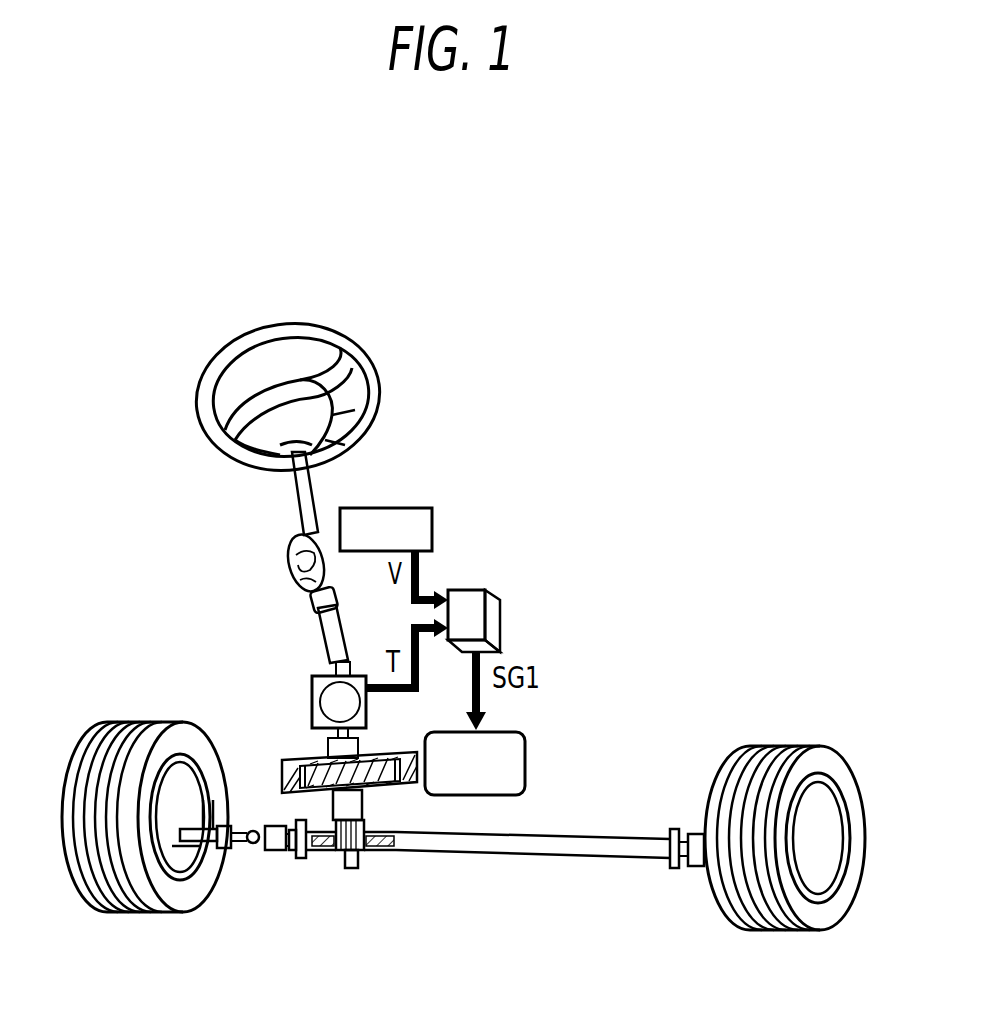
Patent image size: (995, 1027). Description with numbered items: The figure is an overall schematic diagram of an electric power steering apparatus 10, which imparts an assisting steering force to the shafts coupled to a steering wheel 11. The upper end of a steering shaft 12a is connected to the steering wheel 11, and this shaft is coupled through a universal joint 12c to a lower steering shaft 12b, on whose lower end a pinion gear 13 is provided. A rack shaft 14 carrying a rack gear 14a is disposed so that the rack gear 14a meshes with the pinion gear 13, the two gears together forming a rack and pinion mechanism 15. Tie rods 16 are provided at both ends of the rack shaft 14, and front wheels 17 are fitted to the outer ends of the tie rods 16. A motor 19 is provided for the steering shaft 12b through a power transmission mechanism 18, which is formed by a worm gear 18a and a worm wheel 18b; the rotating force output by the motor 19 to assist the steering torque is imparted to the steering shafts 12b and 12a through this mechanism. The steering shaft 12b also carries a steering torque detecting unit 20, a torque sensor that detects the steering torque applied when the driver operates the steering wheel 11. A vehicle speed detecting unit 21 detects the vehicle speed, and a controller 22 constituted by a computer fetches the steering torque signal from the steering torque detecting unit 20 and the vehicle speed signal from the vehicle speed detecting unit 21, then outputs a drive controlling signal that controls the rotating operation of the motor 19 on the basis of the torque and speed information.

The electric power steering apparatus 10 is at (356, 285).
The steering wheel 11 is at (370, 354).
The steering shaft 12a is at (308, 470).
The steering shaft 12b is at (326, 668).
The universal joint 12c is at (274, 553).
The pinion gear 13 is at (333, 852).
The rack shaft 14 is at (498, 849).
The rack gear 14a is at (378, 852).
The rack and pinion mechanism 15 is at (366, 888).
The tie rods 16 is at (235, 850).
The front wheels 17 is at (140, 722).
The power transmission mechanism 18 is at (392, 748).
The worm gear 18a is at (398, 789).
The worm wheel 18b is at (296, 758).
The motor 19 is at (500, 732).
The steering torque detecting unit 20 is at (310, 690).
The vehicle speed detecting unit 21 is at (402, 508).
The controller 22 is at (479, 590).